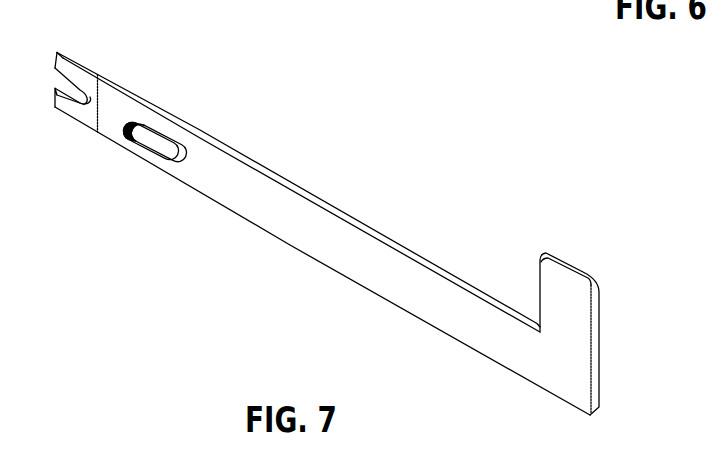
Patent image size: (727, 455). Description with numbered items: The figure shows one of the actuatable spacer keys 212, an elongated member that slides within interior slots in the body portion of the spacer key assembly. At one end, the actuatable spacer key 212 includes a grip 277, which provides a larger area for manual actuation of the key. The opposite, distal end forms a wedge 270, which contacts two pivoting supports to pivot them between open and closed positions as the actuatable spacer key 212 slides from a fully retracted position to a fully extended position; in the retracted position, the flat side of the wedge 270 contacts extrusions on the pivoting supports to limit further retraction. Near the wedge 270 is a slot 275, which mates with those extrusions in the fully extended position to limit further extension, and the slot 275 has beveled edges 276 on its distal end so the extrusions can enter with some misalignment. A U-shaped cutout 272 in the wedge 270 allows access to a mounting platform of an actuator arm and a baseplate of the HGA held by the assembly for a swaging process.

The actuatable spacer key 212 is at (568, 370).
The wedge 270 is at (92, 71).
The U-shaped cutout 272 is at (63, 88).
The slot 275 is at (175, 146).
The beveled edges 276 is at (128, 120).
The grip 277 is at (568, 308).